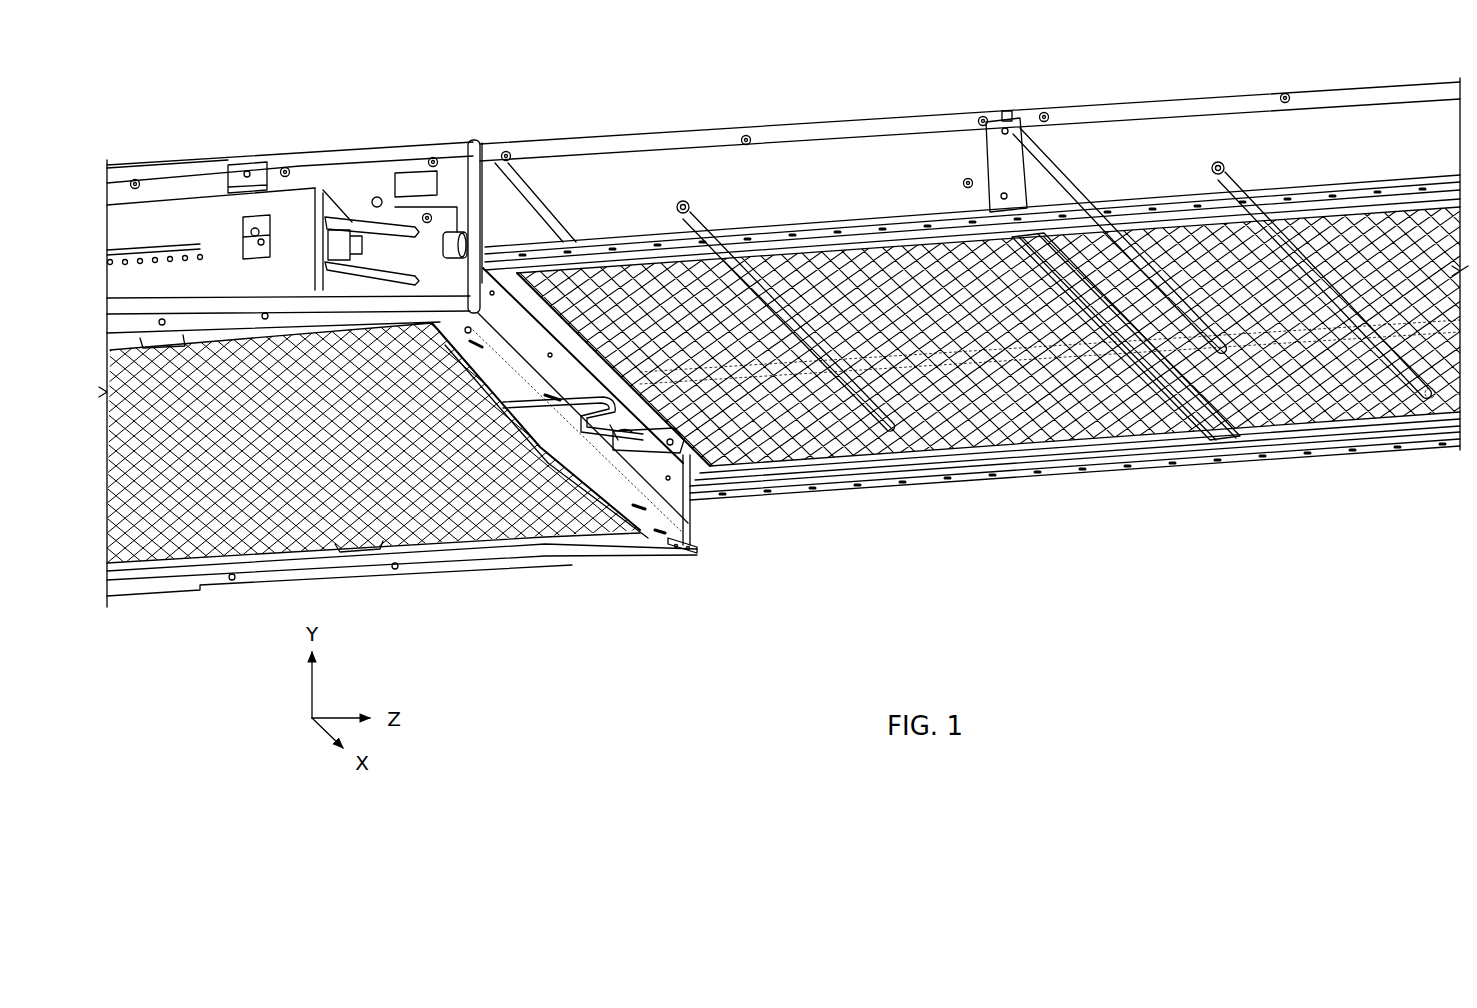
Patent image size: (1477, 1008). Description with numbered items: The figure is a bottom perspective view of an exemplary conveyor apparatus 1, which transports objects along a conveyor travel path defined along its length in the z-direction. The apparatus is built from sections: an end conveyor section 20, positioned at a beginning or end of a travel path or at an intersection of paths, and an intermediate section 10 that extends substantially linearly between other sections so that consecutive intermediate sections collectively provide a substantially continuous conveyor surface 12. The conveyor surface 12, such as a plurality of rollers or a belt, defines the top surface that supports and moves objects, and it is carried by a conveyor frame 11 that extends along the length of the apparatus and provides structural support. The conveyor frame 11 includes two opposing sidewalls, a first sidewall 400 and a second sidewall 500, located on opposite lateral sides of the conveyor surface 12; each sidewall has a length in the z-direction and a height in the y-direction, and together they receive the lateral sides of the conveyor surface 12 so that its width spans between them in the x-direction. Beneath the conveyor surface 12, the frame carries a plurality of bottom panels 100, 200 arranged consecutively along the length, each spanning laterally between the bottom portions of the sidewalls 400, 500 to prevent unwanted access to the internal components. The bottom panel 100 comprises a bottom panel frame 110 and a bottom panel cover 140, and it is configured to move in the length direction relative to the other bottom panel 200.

The conveyor apparatus 1 is at (932, 612).
The intermediate section 10 is at (619, 88).
The end conveyor section 20 is at (235, 125).
The conveyor frame 11 is at (604, 182).
The conveyor surface 12 is at (938, 115).
The bottom panel 100 is at (1034, 431).
The bottom panel frame 110 is at (1213, 443).
The bottom panel cover 140 is at (957, 430).
The bottom panel 200 is at (1383, 402).
The first sidewall 400 is at (735, 170).
The second sidewall 500 is at (881, 478).